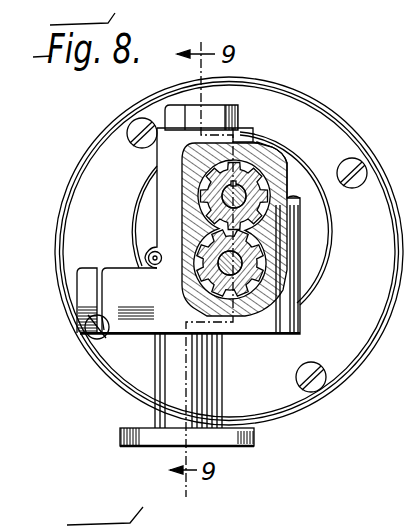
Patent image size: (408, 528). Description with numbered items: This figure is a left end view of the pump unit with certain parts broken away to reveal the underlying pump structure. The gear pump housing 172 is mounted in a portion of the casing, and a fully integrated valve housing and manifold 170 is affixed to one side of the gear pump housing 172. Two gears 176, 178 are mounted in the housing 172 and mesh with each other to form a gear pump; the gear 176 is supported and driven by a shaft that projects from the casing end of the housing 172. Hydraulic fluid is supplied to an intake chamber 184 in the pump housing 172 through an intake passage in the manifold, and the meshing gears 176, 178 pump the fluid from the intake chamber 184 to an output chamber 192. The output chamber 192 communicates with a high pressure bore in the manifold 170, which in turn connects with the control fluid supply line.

The valve housing and manifold 170 is at (272, 322).
The gear pump housing 172 is at (277, 404).
The gear 176 is at (249, 173).
The gear 178 is at (278, 265).
The intake chamber 184 is at (182, 228).
The output chamber 192 is at (261, 231).